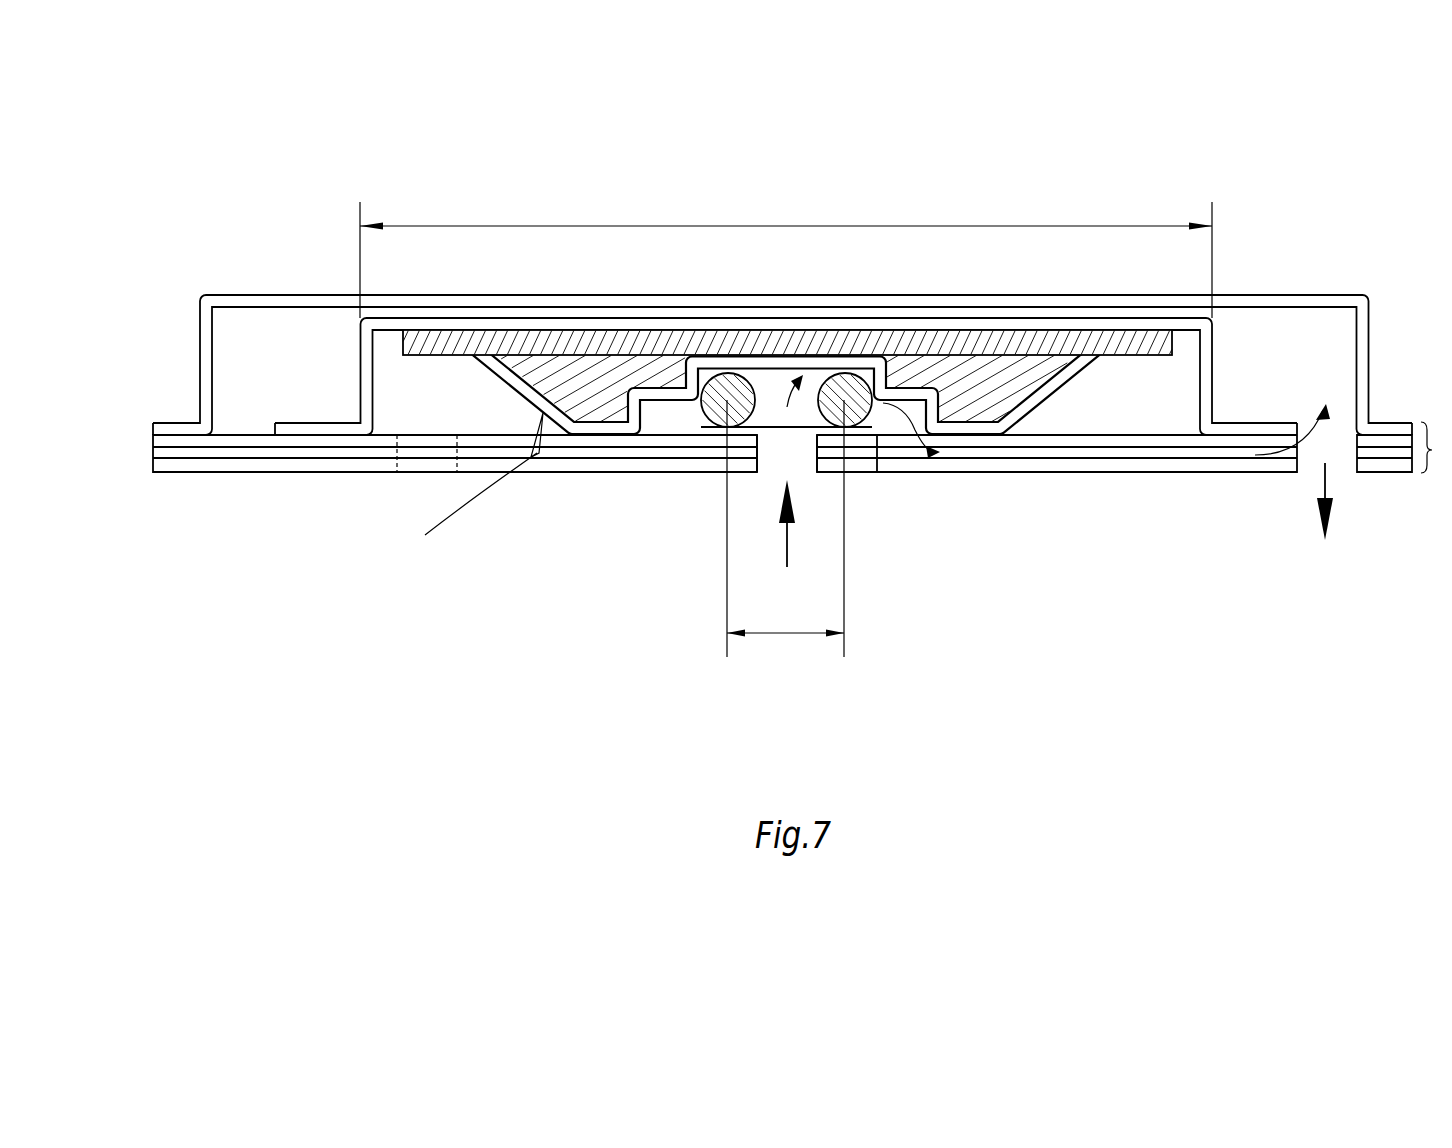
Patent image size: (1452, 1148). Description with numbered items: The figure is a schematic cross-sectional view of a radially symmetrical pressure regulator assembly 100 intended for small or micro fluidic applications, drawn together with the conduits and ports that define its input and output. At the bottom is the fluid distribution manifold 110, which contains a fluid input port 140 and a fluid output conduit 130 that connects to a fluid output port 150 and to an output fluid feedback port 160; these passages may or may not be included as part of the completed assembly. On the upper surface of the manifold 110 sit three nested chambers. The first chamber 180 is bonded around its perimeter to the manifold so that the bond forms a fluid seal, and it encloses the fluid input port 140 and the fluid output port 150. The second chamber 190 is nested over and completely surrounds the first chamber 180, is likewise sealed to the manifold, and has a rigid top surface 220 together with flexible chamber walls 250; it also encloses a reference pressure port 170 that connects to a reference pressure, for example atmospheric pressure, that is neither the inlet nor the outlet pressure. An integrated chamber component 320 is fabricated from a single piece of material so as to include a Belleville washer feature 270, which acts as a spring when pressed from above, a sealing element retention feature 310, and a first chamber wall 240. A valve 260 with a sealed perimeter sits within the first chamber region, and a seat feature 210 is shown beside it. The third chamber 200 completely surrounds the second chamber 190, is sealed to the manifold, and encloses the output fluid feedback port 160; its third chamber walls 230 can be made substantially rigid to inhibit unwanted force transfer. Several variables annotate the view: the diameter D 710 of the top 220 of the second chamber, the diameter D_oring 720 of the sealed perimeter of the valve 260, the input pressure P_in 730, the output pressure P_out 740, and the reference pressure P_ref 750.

The pressure regulator assembly 100 is at (800, 340).
The fluid distribution manifold 110 is at (1432, 450).
The fluid output conduit 130 is at (987, 457).
The fluid input port 140 is at (768, 468).
The fluid output port 150 is at (903, 450).
The output fluid feedback port 160 is at (1340, 443).
The reference pressure port 170 is at (431, 453).
The first chamber 180 is at (780, 393).
The second chamber 190 is at (1118, 367).
The third chamber 200 is at (953, 313).
The o-ring seat 210 is at (822, 362).
The rigid top surface 220 is at (560, 345).
The third chamber walls 230 is at (1363, 363).
The first chamber wall 240 is at (665, 400).
The flexible chamber walls 250 is at (362, 360).
The valve 260 is at (735, 424).
The Belleville washer feature 270 is at (523, 405).
The sealing element retention feature 310 is at (693, 345).
The integrated chamber component 320 is at (467, 485).
The diameter D 710 is at (783, 190).
The diameter D_oring 720 is at (788, 678).
The input pressure P_in 730 is at (812, 595).
The output pressure P_out 740 is at (248, 350).
The reference pressure P_ref 750 is at (408, 402).